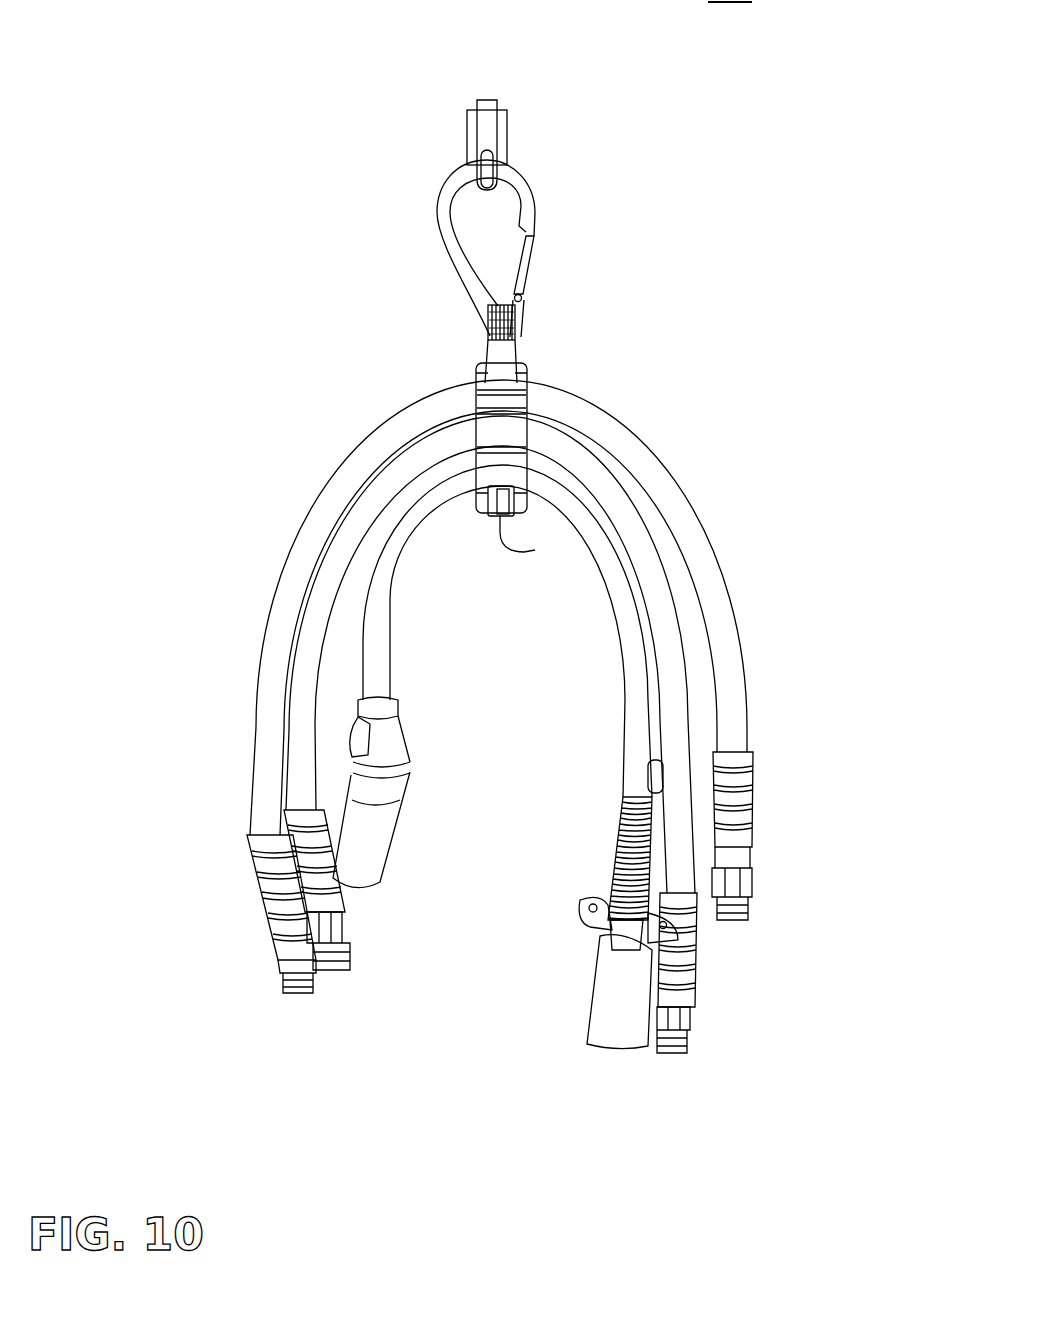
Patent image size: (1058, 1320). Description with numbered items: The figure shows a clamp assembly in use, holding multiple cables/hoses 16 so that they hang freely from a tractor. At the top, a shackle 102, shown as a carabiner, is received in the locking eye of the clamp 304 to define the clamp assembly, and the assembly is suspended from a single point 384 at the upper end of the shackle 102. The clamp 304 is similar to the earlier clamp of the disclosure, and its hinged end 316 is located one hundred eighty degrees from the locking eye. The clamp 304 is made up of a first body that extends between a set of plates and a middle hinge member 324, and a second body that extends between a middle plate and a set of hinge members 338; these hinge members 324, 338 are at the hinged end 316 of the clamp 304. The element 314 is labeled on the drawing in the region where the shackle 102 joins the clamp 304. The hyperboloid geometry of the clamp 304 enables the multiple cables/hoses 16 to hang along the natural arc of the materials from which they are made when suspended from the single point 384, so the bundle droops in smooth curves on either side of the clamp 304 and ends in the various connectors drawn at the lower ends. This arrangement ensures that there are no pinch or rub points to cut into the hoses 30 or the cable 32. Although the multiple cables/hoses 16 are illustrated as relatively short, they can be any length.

The multiple cables/hoses 16 is at (499, 716).
The hoses 30 is at (700, 555).
The cable 32 is at (380, 593).
The shackle 102 is at (548, 202).
The clamp 304 is at (499, 428).
The strap wrap 314 is at (490, 322).
The hinged end 316 is at (480, 505).
The middle hinge member 324 is at (535, 550).
The set of hinge members 338 is at (521, 502).
The single point 384 is at (486, 163).